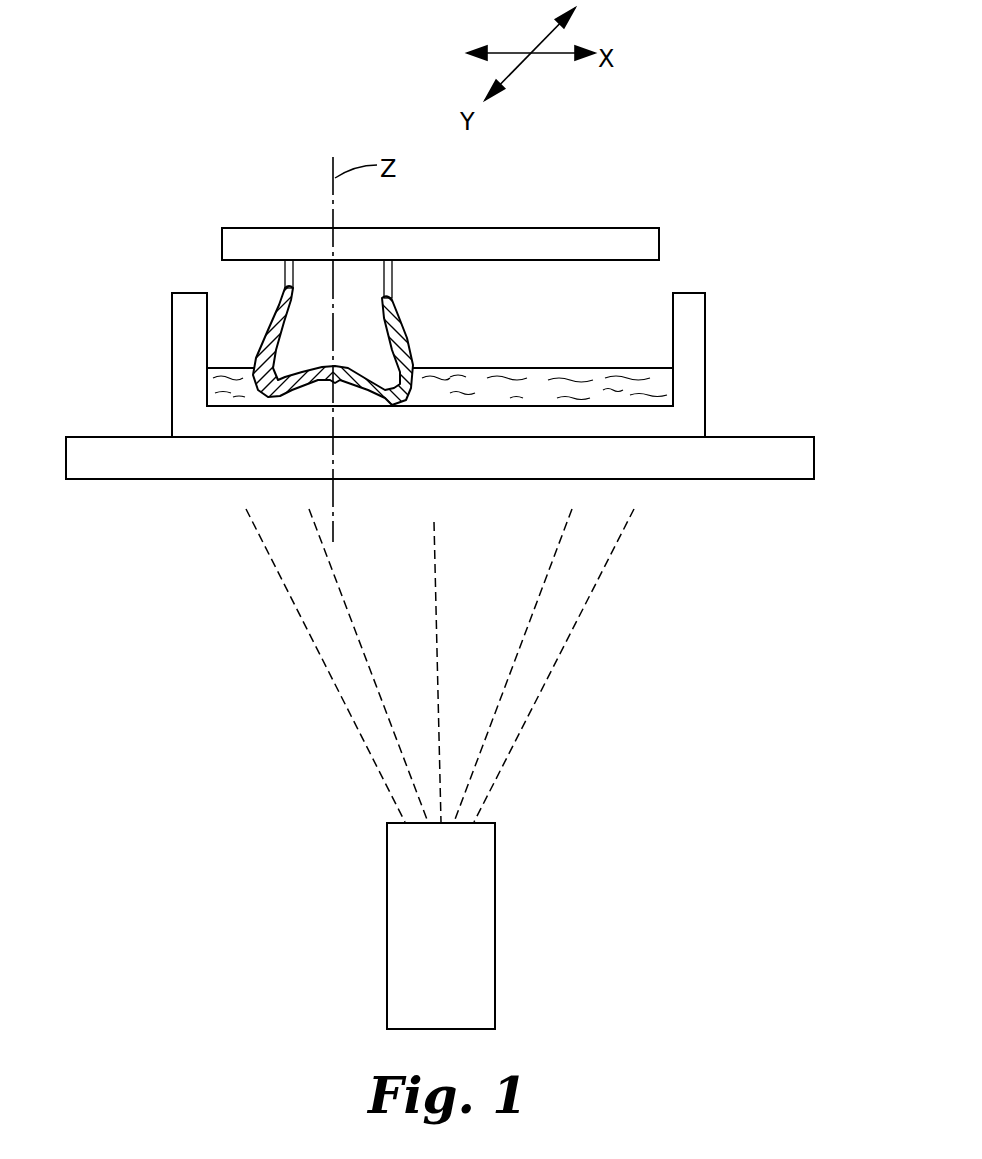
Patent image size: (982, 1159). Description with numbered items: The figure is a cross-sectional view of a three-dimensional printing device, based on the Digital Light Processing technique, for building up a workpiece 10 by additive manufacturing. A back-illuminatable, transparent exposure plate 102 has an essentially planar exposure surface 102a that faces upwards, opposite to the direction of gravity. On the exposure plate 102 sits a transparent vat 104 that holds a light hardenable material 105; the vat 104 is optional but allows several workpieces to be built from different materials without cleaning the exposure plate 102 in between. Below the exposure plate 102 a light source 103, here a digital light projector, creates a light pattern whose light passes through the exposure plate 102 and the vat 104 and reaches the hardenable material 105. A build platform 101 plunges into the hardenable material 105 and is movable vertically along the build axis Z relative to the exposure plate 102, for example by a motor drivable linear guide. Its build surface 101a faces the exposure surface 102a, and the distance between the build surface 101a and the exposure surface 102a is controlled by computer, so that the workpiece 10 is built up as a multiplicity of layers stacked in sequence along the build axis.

The workpiece 10 is at (240, 292).
The build platform 101 is at (538, 237).
The build surface 101a is at (590, 260).
The exposure plate 102 is at (122, 468).
The exposure surface 102a is at (90, 437).
The light source 103 is at (475, 930).
The vat 104 is at (692, 315).
The light hardenable material 105 is at (658, 380).